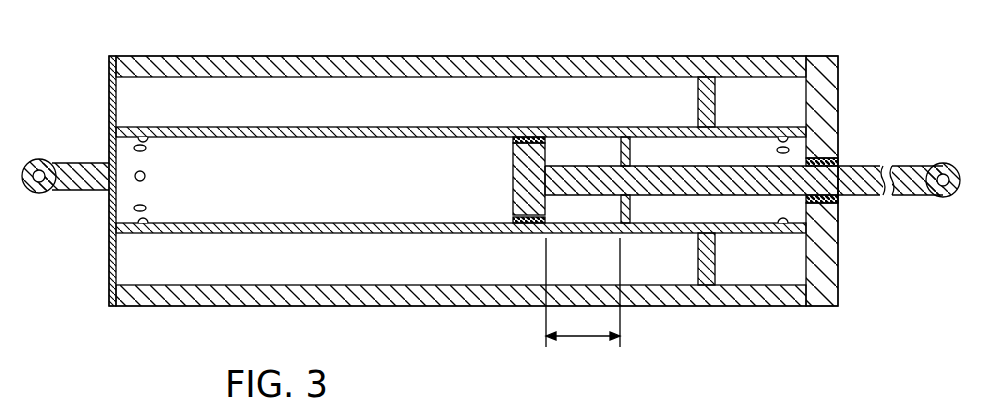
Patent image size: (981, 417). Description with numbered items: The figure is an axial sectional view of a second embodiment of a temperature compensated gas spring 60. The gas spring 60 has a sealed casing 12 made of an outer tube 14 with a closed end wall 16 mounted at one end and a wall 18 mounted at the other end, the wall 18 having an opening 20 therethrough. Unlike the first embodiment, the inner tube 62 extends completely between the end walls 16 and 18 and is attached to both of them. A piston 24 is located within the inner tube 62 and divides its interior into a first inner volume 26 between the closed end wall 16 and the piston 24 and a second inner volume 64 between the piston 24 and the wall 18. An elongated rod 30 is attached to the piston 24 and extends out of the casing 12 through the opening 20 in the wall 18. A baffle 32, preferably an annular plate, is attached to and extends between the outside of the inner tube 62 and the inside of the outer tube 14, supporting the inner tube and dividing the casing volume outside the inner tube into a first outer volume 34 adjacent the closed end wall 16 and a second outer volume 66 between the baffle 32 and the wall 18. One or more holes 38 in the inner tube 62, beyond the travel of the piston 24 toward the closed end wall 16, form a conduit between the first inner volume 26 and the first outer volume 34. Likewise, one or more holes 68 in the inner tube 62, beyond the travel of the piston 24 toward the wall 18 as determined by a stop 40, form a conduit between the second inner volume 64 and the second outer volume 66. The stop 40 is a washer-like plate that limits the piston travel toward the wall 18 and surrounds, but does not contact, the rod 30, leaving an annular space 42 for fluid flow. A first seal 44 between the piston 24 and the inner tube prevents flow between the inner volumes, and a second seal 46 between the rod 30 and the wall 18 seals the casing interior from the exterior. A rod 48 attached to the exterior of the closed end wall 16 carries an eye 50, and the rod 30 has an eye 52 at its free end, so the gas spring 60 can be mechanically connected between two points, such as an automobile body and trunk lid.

The gas spring 60 is at (104, 38).
The sealed casing 12 is at (109, 60).
The outer tube 14 is at (325, 57).
The closed end wall 16 is at (109, 108).
The wall 18 is at (838, 85).
The opening 20 is at (847, 197).
The piston 24 is at (513, 163).
The first inner volume 26 is at (374, 209).
The rod 30 is at (843, 193).
The baffle 32 is at (712, 95).
The first outer volume 34 is at (230, 97).
The holes 38 is at (136, 179).
The stop 40 is at (616, 140).
The annular space 42 is at (632, 200).
The first seal 44 is at (516, 217).
The second seal 46 is at (838, 165).
The rod 48 is at (72, 190).
The eye 50 is at (40, 172).
The eye 52 is at (943, 176).
The inner tube 62 is at (388, 125).
The second inner volume 64 is at (579, 148).
The second outer volume 66 is at (774, 92).
The holes 68 is at (791, 151).